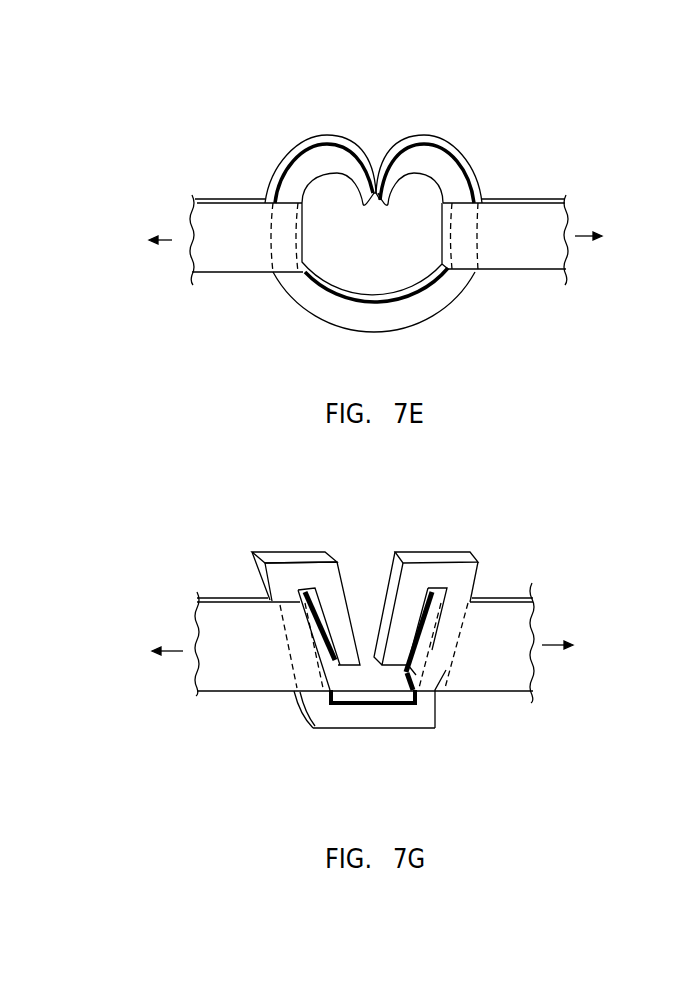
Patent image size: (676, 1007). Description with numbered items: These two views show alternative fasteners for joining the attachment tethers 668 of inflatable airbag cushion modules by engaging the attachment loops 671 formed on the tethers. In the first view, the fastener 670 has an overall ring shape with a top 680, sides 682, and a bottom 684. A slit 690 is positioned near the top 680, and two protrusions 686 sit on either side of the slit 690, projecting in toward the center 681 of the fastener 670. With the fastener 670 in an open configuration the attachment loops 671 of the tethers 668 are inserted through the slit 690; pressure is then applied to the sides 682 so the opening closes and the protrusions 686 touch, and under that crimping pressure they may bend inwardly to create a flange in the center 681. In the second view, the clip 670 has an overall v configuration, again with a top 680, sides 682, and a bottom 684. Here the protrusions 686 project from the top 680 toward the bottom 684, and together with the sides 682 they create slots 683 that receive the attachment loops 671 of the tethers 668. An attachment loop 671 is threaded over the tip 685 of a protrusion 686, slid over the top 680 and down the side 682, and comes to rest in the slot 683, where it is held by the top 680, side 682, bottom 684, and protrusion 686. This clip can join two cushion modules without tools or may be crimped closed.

In FIG. 7E, the attachment tether 668 is at (207, 213).
In FIG. 7G, the attachment tether 668 is at (200, 597).
In FIG. 7E, the fastener 670 is at (488, 148).
In FIG. 7G, the fastener 670 is at (518, 522).
In FIG. 7E, the attachment loop 671 is at (229, 199).
In FIG. 7G, the attachment loop 671 is at (232, 598).
In FIG. 7E, the top 680 is at (443, 117).
In FIG. 7G, the top 680 is at (302, 555).
In FIG. 7E, the center 681 is at (395, 270).
In FIG. 7E, the sides 682 is at (297, 292).
In FIG. 7G, the sides 682 is at (258, 603).
In FIG. 7G, the slot 683 is at (313, 638).
In FIG. 7E, the bottom 684 is at (390, 324).
In FIG. 7G, the bottom 684 is at (355, 728).
In FIG. 7G, the tip 685 is at (351, 657).
In FIG. 7E, the protrusion 686 is at (352, 187).
In FIG. 7G, the protrusion 686 is at (335, 648).
In FIG. 7E, the slit 690 is at (367, 118).
In FIG. 7G, the slit 690 is at (365, 554).